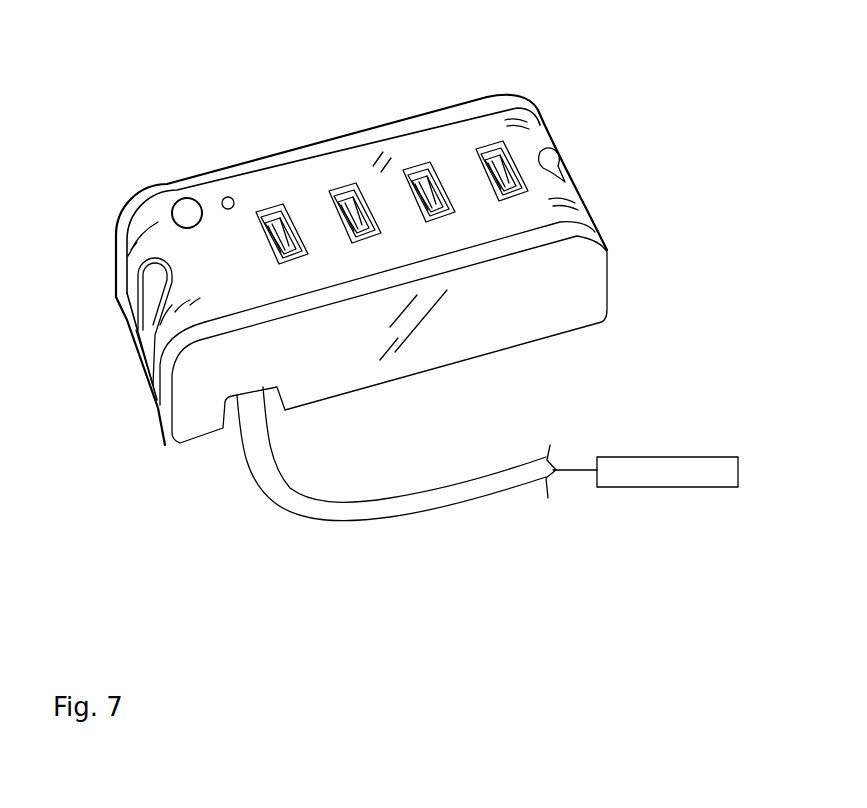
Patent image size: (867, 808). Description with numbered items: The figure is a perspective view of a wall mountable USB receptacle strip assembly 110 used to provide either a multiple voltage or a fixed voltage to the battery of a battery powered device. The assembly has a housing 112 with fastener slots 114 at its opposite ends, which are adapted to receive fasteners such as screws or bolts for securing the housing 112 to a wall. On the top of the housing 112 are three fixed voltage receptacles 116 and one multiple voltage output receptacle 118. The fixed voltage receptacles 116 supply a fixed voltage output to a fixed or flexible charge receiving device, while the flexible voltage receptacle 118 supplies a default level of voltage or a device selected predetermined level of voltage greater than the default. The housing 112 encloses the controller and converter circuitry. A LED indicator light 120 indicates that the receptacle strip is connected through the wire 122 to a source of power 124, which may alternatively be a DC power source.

The USB receptacle strip assembly 110 is at (356, 235).
The housing 112 is at (483, 332).
The fastener slots 114 is at (153, 294).
The fixed voltage receptacles 116 is at (497, 147).
The multiple voltage output receptacle 118 is at (282, 212).
The LED indicator light 120 is at (188, 217).
The wire 122 is at (320, 513).
The source of power 124 is at (720, 460).